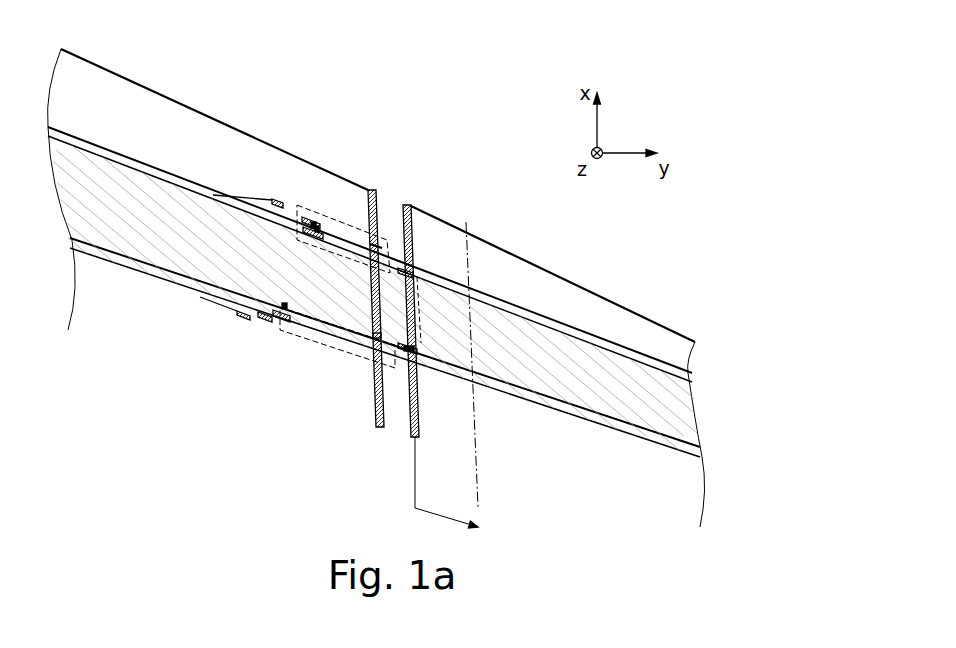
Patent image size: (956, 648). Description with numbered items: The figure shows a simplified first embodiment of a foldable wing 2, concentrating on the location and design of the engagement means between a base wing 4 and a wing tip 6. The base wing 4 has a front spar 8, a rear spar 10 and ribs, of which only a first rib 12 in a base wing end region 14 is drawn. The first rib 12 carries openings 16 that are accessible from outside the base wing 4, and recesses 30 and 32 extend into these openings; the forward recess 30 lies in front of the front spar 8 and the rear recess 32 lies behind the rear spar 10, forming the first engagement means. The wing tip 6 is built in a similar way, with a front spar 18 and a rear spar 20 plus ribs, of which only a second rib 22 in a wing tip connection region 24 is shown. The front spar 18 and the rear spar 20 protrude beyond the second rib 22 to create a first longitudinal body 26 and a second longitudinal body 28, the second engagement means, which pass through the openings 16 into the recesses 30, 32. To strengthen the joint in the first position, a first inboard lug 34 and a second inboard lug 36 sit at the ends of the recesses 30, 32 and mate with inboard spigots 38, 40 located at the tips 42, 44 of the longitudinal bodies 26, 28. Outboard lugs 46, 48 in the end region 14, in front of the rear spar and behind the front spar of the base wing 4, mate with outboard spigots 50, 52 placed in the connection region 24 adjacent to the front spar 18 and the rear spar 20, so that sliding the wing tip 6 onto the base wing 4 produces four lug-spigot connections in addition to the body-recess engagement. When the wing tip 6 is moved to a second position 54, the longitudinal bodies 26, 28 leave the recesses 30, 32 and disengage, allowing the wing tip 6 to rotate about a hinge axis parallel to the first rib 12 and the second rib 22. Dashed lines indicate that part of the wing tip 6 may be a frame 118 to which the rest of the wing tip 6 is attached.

The foldable wing 2 is at (424, 73).
The base wing 4 is at (103, 102).
The wing tip 6 is at (627, 323).
The front spar 8 is at (163, 177).
The rear spar 10 is at (148, 270).
The first rib 12 is at (383, 427).
The base wing end region 14 is at (389, 299).
The openings 16 is at (331, 291).
The front spar 18 is at (503, 297).
The rear spar 20 is at (610, 422).
The second rib 22 is at (420, 408).
The wing tip connection region 24 is at (463, 283).
The first longitudinal body 26 is at (365, 262).
The second longitudinal body 28 is at (305, 327).
The forward recess 30 is at (305, 217).
The rear recess 32 is at (260, 312).
The first inboard lug 34 is at (277, 198).
The second inboard lug 36 is at (240, 312).
The inboard spigot 38 is at (313, 222).
The inboard spigot 40 is at (282, 295).
The tip 42 is at (315, 243).
The tip 44 is at (282, 314).
The outboard lug 46 is at (375, 256).
The outboard lug 48 is at (377, 322).
The outboard spigot 50 is at (402, 270).
The outboard spigot 52 is at (420, 348).
The second position 54 is at (480, 512).
The frame 118 is at (416, 350).